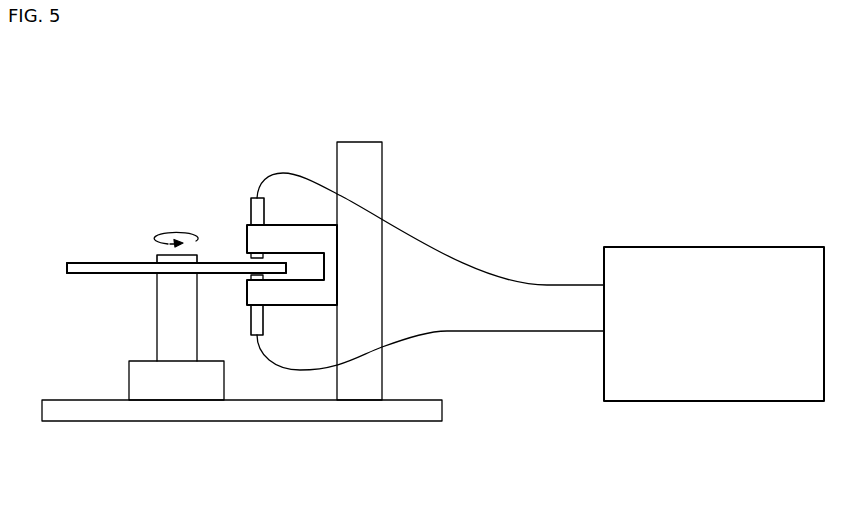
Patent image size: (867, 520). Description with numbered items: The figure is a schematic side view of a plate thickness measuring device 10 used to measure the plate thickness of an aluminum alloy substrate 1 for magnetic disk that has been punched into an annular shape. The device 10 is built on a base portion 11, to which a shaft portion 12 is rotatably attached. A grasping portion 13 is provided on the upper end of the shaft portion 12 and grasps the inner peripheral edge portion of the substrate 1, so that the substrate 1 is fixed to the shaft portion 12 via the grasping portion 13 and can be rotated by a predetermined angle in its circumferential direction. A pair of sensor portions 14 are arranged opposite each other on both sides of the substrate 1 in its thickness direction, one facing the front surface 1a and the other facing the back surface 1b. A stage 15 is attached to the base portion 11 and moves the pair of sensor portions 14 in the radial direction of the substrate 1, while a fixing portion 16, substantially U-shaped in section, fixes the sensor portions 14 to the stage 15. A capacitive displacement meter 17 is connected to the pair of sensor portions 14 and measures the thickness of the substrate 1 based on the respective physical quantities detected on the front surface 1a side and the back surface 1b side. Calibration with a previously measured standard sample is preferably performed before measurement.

The aluminum alloy substrate for magnetic disk 1 is at (72, 257).
The front surface 1a is at (92, 263).
The back surface 1b is at (93, 273).
The plate thickness measuring device 10 is at (379, 131).
The base portion 11 is at (242, 416).
The shaft portion 12 is at (177, 315).
The grasping portion 13 is at (157, 257).
The sensor portion 14 is at (253, 210).
The stage 15 is at (358, 173).
The fixing portion 16 is at (277, 240).
The capacitive displacement meter 17 is at (708, 247).